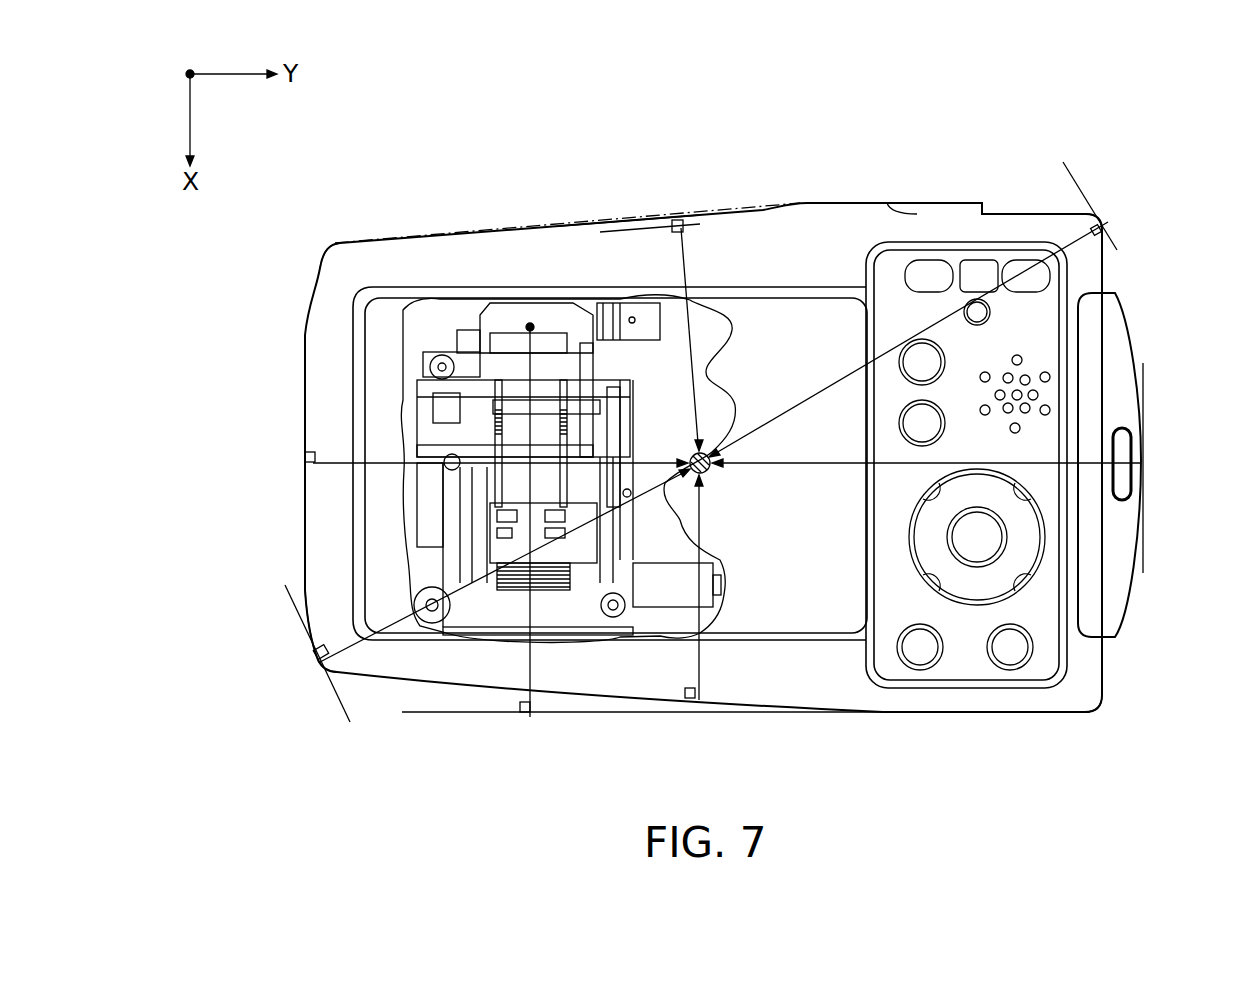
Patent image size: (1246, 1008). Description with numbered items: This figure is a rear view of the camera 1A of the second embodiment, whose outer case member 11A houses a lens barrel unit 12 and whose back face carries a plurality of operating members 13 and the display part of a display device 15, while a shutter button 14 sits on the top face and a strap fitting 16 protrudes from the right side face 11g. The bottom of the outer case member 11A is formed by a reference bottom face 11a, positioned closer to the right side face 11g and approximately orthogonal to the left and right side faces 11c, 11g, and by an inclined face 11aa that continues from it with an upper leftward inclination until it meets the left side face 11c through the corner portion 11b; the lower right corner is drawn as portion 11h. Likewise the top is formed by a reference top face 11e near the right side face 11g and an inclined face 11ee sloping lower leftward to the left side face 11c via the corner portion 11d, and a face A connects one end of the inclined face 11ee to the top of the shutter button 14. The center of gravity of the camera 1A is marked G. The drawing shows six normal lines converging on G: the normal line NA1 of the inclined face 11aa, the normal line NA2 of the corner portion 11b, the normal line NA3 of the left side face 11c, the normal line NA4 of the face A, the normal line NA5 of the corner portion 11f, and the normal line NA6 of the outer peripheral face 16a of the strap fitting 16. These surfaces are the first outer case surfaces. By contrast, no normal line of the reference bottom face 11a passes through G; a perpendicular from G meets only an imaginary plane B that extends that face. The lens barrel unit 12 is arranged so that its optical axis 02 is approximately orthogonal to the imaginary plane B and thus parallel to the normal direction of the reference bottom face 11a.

The camera 1A is at (1051, 130).
The optical axis 02 is at (527, 358).
The lens barrel unit 12 is at (542, 308).
The outer case member 11A is at (653, 237).
The inclined face 11ee is at (617, 216).
The face A is at (743, 198).
The display device 15 is at (824, 330).
The shutter button 14 is at (927, 207).
The reference top face 11e is at (992, 210).
The operating members 13 is at (938, 270).
The corner portion 11f is at (1114, 223).
The right side face 11g is at (1112, 407).
The outer peripheral face 16a is at (1142, 482).
The strap fitting 16 is at (1121, 617).
The lower right corner 11h is at (1108, 713).
The reference bottom face 11a is at (942, 719).
The inclined face 11aa is at (600, 718).
The imaginary plane B is at (438, 718).
The corner portion 11b is at (319, 666).
The left side face 11c is at (296, 487).
The corner portion 11d is at (319, 248).
The center of gravity G is at (710, 450).
The normal line NA1 is at (707, 505).
The normal line NA2 is at (700, 530).
The normal line NA3 is at (645, 460).
The normal line NA4 is at (713, 365).
The normal line NA5 is at (823, 393).
The normal line NA6 is at (837, 466).